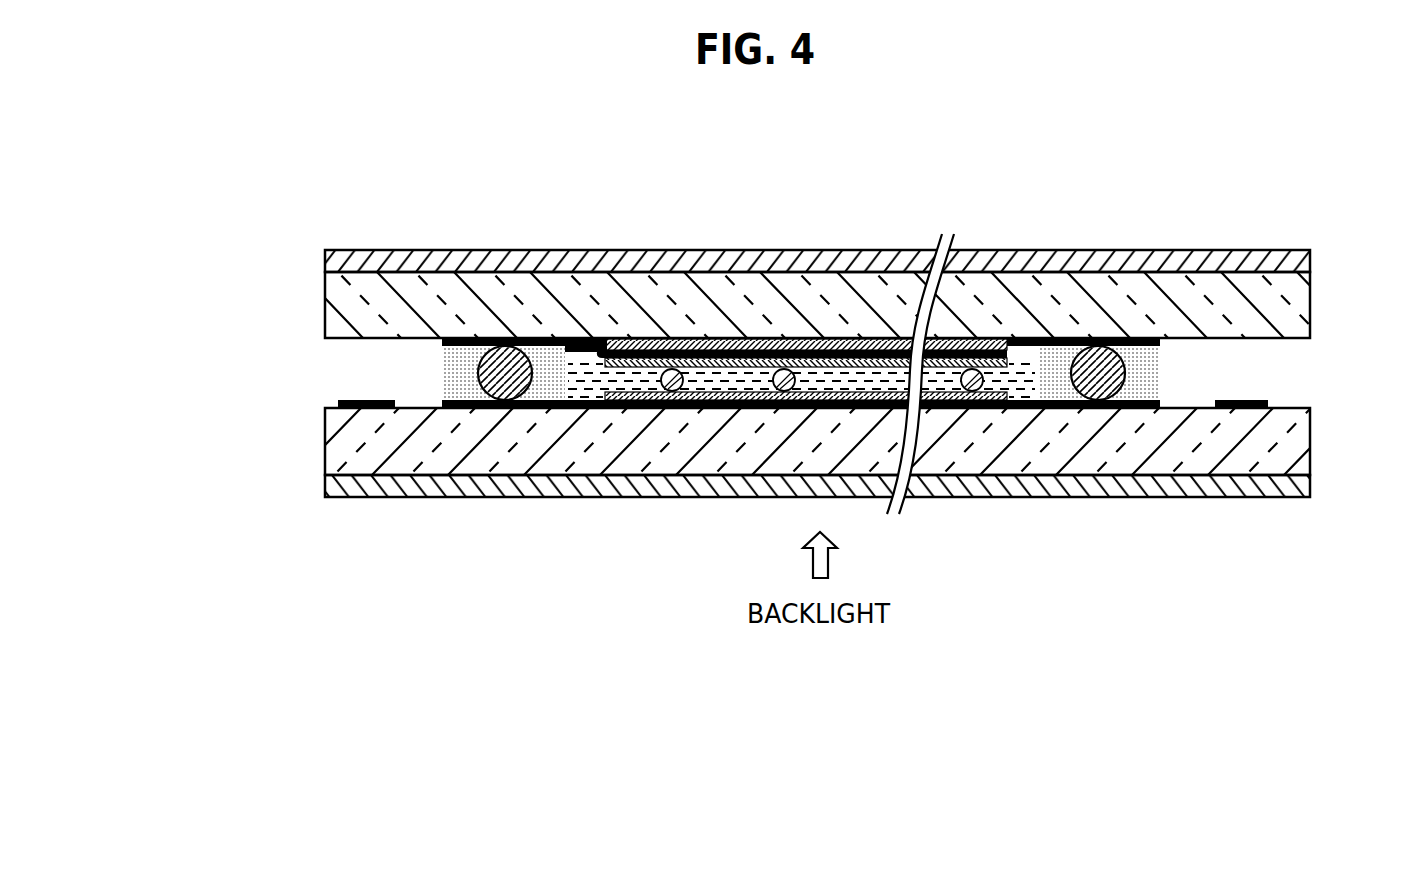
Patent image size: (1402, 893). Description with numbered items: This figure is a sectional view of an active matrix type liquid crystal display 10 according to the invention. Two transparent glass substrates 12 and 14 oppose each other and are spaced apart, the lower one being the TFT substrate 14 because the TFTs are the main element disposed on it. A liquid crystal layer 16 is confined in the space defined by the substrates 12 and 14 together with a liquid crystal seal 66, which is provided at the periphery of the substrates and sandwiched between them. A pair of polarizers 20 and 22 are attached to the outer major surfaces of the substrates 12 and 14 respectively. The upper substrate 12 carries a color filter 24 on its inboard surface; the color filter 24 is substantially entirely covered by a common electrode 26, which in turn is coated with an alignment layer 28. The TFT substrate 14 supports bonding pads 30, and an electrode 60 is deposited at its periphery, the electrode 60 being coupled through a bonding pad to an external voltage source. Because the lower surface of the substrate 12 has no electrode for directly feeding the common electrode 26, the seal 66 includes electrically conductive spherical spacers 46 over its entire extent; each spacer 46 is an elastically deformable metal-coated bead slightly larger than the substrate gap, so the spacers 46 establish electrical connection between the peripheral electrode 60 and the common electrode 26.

The liquid crystal display 10 is at (444, 214).
The transparent substrate 12 is at (1293, 295).
The TFT substrate 14 is at (1293, 450).
The liquid crystal layer 16 is at (723, 380).
The polarizer 20 is at (1188, 250).
The polarizer 22 is at (1248, 497).
The color filter 24 is at (642, 348).
The common electrode 26 is at (522, 352).
The alignment layer 28 is at (868, 352).
The bonding pads 30 is at (352, 399).
The electrically conductive spherical spacers 46 is at (500, 386).
The electrode 60 is at (440, 403).
The liquid crystal seal 66 is at (424, 359).